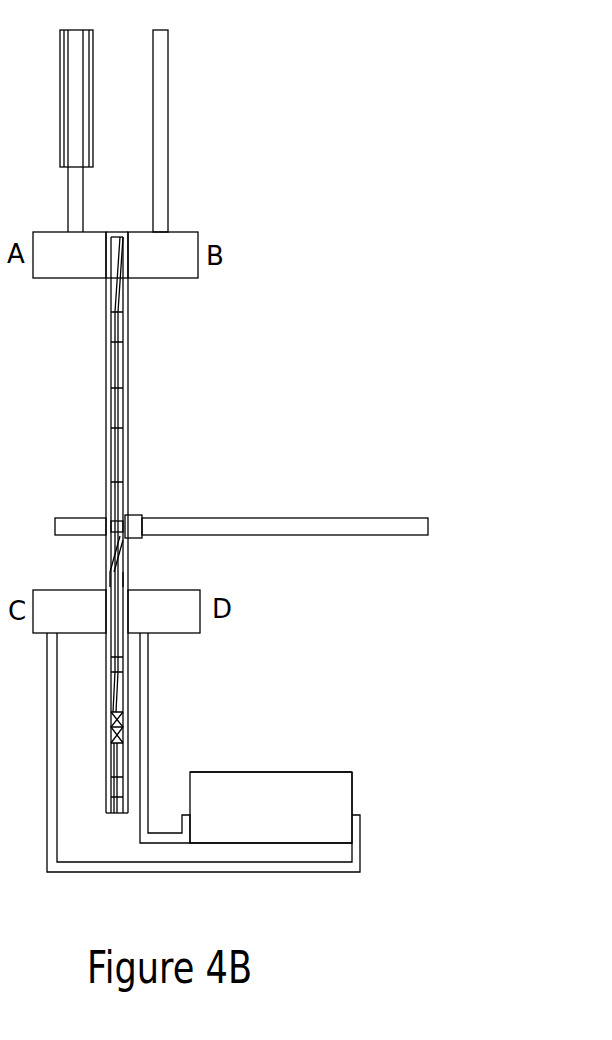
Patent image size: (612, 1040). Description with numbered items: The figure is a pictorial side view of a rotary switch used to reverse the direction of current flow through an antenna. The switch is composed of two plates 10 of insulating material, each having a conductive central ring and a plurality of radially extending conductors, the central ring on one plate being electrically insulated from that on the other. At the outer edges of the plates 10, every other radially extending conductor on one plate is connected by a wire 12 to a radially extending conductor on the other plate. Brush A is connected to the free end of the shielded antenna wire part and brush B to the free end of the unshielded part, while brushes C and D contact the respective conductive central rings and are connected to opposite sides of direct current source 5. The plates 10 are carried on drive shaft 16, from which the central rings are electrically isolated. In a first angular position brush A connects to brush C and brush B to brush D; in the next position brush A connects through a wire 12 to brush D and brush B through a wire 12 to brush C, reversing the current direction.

The direct current source 5 is at (277, 772).
The plates 10 is at (108, 319).
The wire 12 is at (127, 453).
The drive shaft 16 is at (220, 527).